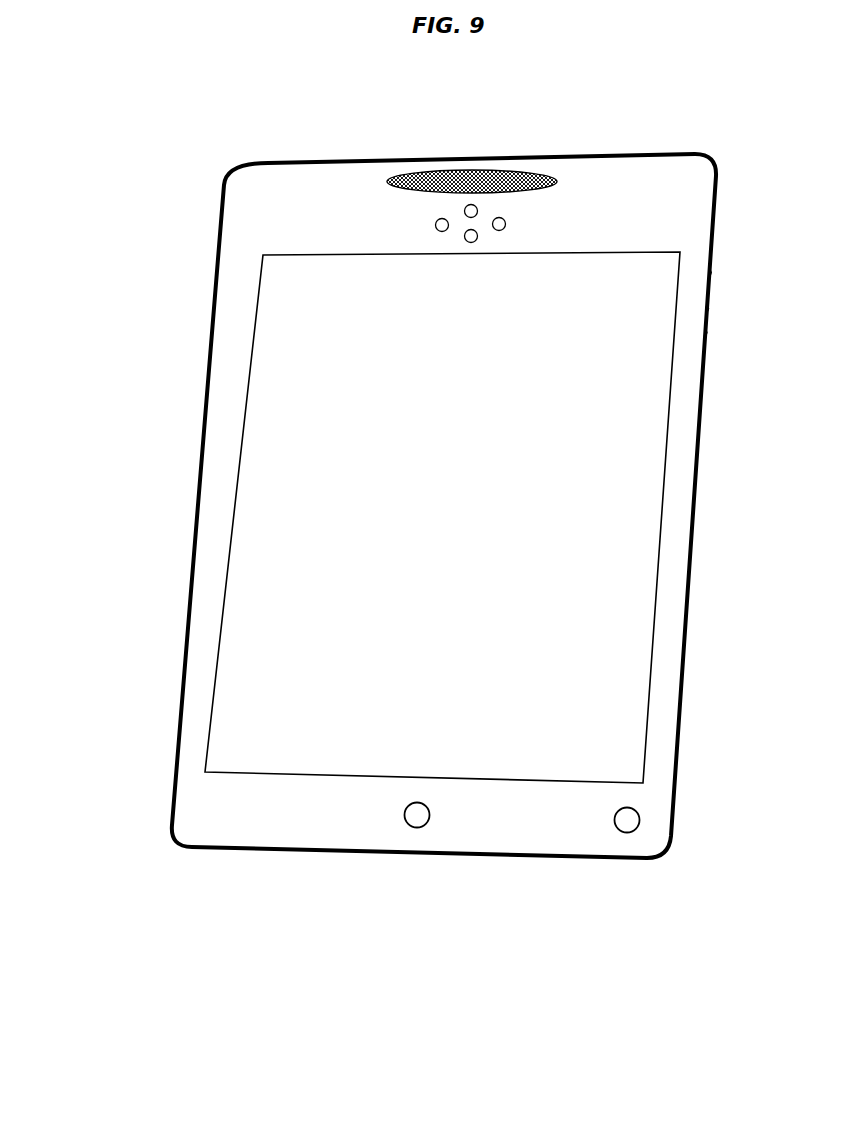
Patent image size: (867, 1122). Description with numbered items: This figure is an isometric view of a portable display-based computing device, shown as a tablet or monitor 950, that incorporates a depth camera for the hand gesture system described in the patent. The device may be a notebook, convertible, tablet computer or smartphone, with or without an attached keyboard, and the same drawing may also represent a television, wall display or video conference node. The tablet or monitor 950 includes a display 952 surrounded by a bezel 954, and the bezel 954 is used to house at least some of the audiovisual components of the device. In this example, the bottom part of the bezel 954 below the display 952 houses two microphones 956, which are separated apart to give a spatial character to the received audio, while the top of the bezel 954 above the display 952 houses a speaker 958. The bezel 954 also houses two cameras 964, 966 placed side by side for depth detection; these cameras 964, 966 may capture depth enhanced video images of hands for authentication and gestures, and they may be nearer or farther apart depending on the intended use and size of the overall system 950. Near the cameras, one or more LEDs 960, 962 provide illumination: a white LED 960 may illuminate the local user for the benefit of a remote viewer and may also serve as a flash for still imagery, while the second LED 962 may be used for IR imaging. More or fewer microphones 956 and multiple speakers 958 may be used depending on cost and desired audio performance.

The tablet or monitor 950 is at (413, 505).
The display 952 is at (444, 650).
The bezel 954 is at (673, 578).
The microphones 956 is at (413, 828).
The speaker 958 is at (490, 178).
The white LED 960 is at (470, 243).
The second LED 962 is at (478, 208).
The camera 964 is at (503, 230).
The camera 966 is at (435, 225).